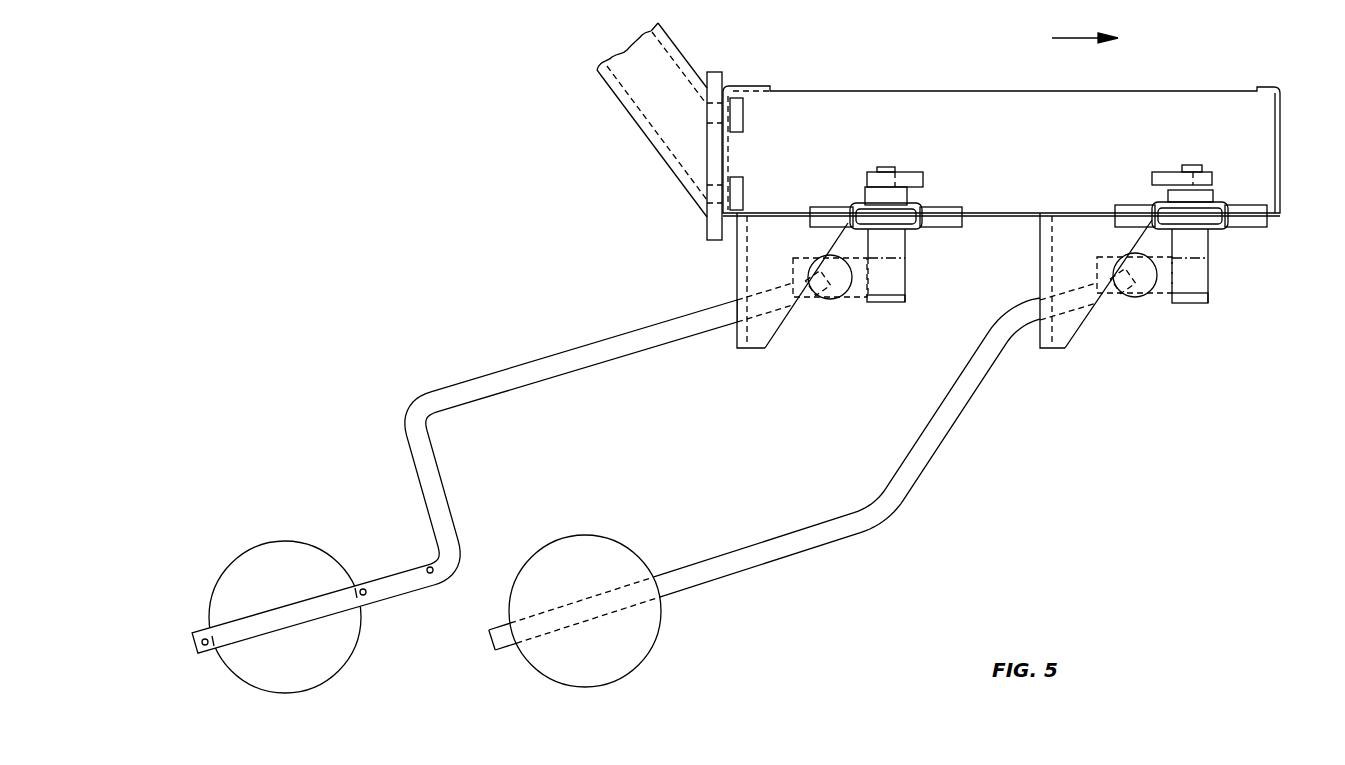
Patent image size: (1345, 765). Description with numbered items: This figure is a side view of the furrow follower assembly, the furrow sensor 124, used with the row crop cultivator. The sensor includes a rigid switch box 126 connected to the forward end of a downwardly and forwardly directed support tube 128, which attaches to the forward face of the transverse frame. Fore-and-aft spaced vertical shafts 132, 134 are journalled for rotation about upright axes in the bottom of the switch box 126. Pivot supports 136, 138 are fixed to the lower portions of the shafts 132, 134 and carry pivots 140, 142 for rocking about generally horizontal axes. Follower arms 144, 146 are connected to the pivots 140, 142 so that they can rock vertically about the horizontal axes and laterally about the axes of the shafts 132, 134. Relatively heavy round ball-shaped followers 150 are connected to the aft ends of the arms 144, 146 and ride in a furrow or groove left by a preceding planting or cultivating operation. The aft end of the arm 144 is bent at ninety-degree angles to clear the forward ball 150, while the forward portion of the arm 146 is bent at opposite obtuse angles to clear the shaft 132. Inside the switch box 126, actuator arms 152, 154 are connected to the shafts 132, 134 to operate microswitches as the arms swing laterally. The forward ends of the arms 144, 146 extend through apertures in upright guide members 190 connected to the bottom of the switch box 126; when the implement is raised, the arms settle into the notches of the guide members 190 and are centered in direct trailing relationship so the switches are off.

The furrow sensor 124 is at (1218, 394).
The switch box 126 is at (1282, 152).
The support tube 128 is at (645, 136).
The vertical shaft 132 is at (905, 245).
The vertical shaft 134 is at (1208, 245).
The pivot support 136 is at (858, 302).
The pivot support 138 is at (1163, 300).
The pivot 140 is at (838, 302).
The pivot 142 is at (1140, 300).
The follower arm 144 is at (627, 334).
The follower arm 146 is at (812, 530).
The follower 150 is at (300, 543).
The actuator arm 152 is at (911, 170).
The actuator arm 154 is at (1170, 168).
The upright guide member 190 is at (757, 352).